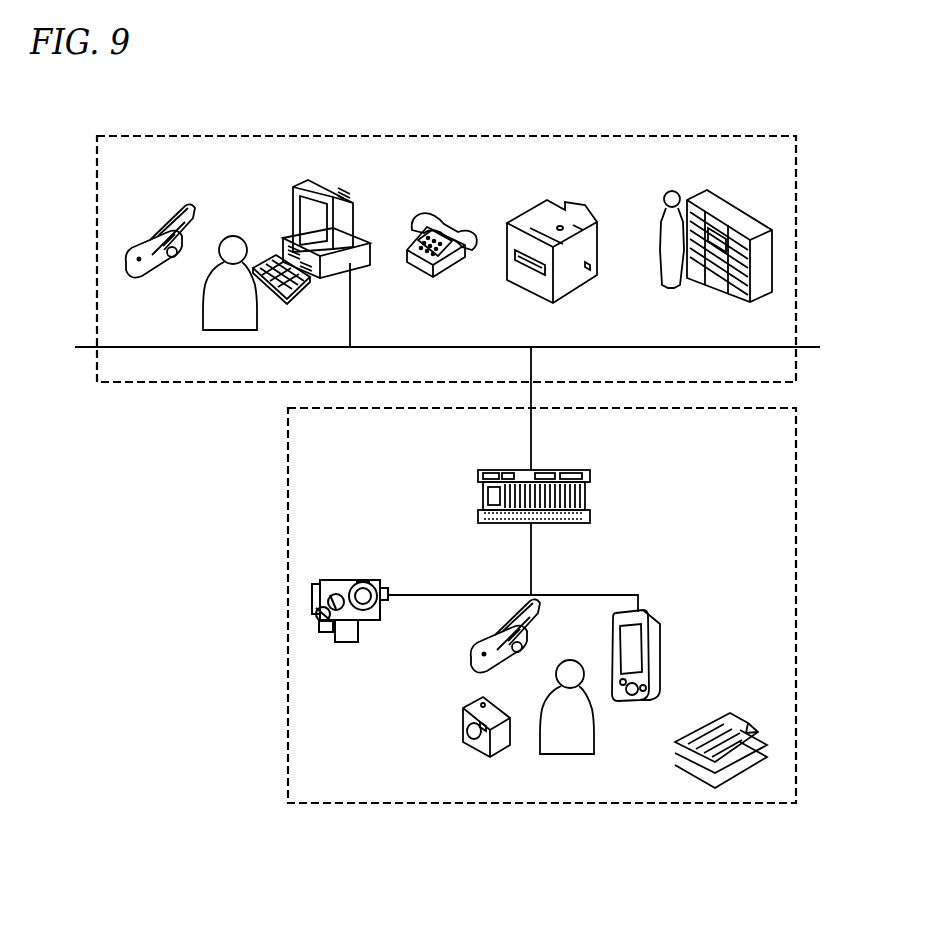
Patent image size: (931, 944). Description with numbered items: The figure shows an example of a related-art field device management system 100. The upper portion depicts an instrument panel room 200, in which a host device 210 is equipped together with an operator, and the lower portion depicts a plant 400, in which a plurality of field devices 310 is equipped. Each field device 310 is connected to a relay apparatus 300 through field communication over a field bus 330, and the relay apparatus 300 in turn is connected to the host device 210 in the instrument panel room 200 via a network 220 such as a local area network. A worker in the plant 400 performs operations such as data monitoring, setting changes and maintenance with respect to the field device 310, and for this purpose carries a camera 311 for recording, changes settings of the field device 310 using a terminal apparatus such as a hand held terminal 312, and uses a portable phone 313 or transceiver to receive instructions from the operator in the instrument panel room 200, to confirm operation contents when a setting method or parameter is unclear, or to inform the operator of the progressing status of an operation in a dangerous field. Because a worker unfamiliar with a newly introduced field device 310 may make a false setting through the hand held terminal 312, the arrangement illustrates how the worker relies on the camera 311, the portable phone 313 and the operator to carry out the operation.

The field device management system 100 is at (452, 826).
The instrument panel room 200 is at (97, 227).
The host device 210 is at (342, 200).
The network 220 is at (597, 347).
The relay apparatus 300 is at (588, 491).
The field device 310 is at (382, 610).
The camera 311 is at (512, 740).
The hand held terminal 312 is at (667, 668).
The portable phone 313 is at (537, 617).
The field bus 330 is at (463, 594).
The plant 400 is at (287, 495).